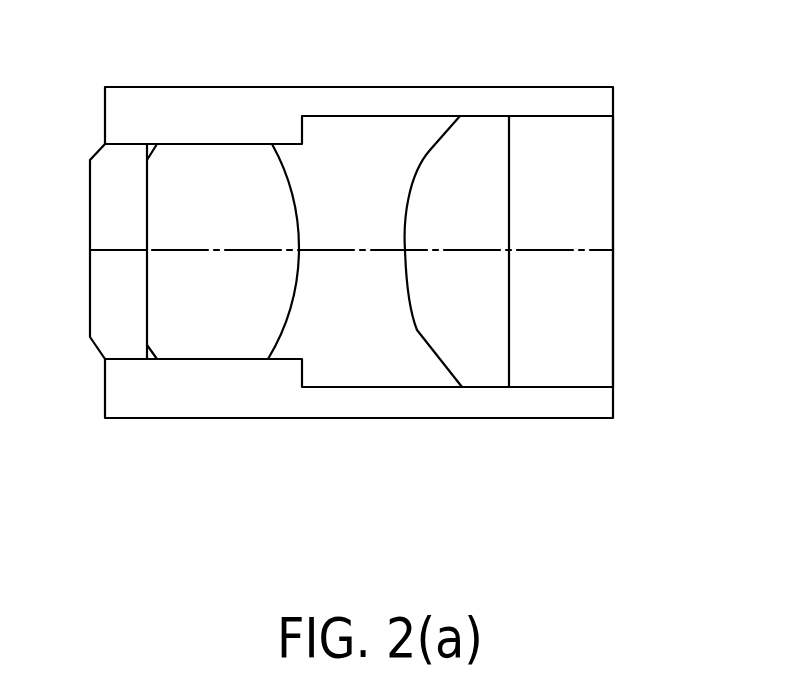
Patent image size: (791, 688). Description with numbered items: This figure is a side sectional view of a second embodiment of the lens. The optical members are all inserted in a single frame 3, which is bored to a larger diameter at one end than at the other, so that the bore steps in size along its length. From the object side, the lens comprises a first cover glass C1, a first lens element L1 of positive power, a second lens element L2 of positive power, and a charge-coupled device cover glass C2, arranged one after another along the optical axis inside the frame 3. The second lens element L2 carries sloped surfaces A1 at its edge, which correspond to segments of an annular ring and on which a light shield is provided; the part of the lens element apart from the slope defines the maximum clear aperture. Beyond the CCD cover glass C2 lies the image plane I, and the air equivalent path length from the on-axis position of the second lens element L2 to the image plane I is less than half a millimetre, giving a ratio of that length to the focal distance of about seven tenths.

The frame 3 is at (150, 108).
The sloped surface A1 is at (430, 150).
The first cover glass C1 is at (103, 337).
The CCD cover glass C2 is at (573, 378).
The first lens element L1 is at (198, 338).
The second lens element L2 is at (472, 373).
The image plane I is at (613, 348).